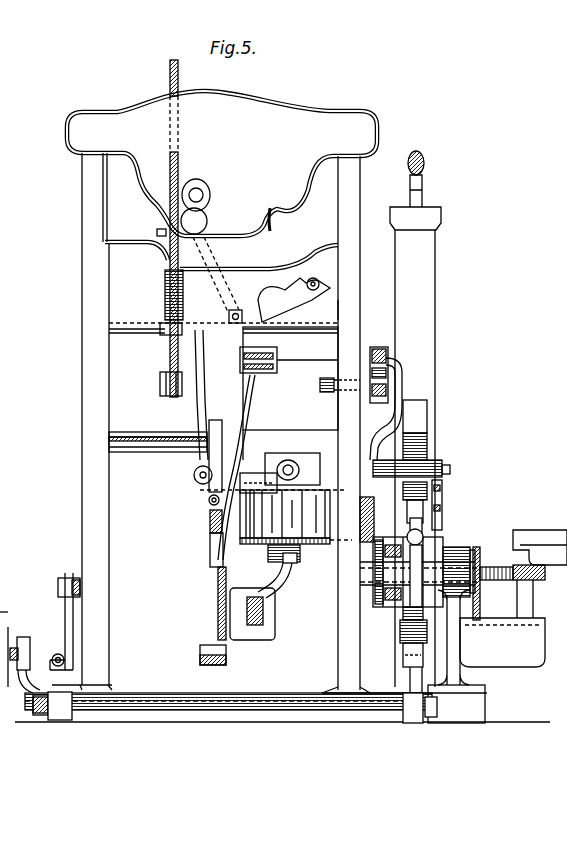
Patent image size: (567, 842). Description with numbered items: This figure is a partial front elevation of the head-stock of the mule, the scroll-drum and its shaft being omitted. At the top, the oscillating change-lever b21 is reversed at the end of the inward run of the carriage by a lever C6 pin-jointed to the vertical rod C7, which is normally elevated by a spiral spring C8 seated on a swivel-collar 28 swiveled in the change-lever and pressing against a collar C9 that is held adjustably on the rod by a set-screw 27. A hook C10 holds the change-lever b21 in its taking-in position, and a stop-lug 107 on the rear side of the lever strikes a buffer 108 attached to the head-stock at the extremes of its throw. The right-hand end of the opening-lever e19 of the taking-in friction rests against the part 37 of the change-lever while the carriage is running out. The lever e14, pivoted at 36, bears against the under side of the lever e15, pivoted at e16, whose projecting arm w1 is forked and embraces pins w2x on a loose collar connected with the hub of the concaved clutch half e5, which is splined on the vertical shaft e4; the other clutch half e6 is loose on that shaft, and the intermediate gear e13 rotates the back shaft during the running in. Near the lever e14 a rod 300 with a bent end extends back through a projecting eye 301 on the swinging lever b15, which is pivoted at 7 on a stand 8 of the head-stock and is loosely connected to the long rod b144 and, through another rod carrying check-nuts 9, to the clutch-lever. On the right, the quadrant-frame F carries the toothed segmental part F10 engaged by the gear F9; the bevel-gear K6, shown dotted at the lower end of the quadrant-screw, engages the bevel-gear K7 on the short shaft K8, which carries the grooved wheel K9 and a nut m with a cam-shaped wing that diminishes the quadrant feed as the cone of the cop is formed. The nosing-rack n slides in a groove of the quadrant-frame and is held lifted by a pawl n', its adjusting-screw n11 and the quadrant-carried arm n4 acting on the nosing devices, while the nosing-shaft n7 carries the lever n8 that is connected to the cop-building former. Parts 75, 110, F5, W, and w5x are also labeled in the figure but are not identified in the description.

The vertical rod C7 is at (170, 80).
The collar C9 is at (150, 210).
The stop-lug 107 is at (210, 230).
The oscillating change-lever b21 is at (224, 222).
The buffer 108 is at (275, 226).
The hook C10 is at (312, 279).
The pivot 75 is at (243, 318).
The set-screw 27 is at (157, 232).
The spiral spring C8 is at (165, 284).
The swivel-collar 28 is at (163, 336).
The part of the oscillating change-lever 37 is at (208, 363).
The lever C6 is at (160, 388).
The opening-lever e19 is at (200, 407).
The stand 8 is at (272, 356).
The pivot 7 is at (258, 376).
The housing F5 is at (318, 428).
The segmental part F10 is at (388, 365).
The gear F9 is at (382, 409).
The pawl n' is at (431, 430).
The shaft 110 is at (451, 468).
The nosing-rack n is at (431, 506).
The adjusting-screw n11 is at (442, 502).
The arm n4 is at (495, 506).
The bevel-gear K6 is at (443, 545).
The short shaft K8 is at (497, 566).
The nut m is at (550, 540).
The grooved wheel K9 is at (480, 588).
The bevel-gear K7 is at (443, 587).
The pivot 36 is at (109, 433).
The frame W is at (82, 463).
The quadrant-frame F is at (340, 310).
The pivot e16 is at (195, 474).
The lever e15 is at (208, 493).
The intermediate gear e13 is at (210, 515).
The concaved half of friction-clutch e5 is at (240, 517).
The other half of friction-clutch e6 is at (327, 545).
The vertical shaft e4 is at (290, 563).
The lever e14 is at (210, 560).
The swinging lever b15 is at (218, 606).
The long rod b144 is at (200, 657).
The rod 300 is at (255, 626).
The projecting eye 301 is at (262, 597).
The nosing-shaft n7 is at (232, 703).
The lever n8 is at (55, 667).
The check-nuts 9 is at (4, 617).
The projecting arm w1 is at (255, 473).
The pins w2x is at (290, 460).
The housing w5x is at (300, 479).